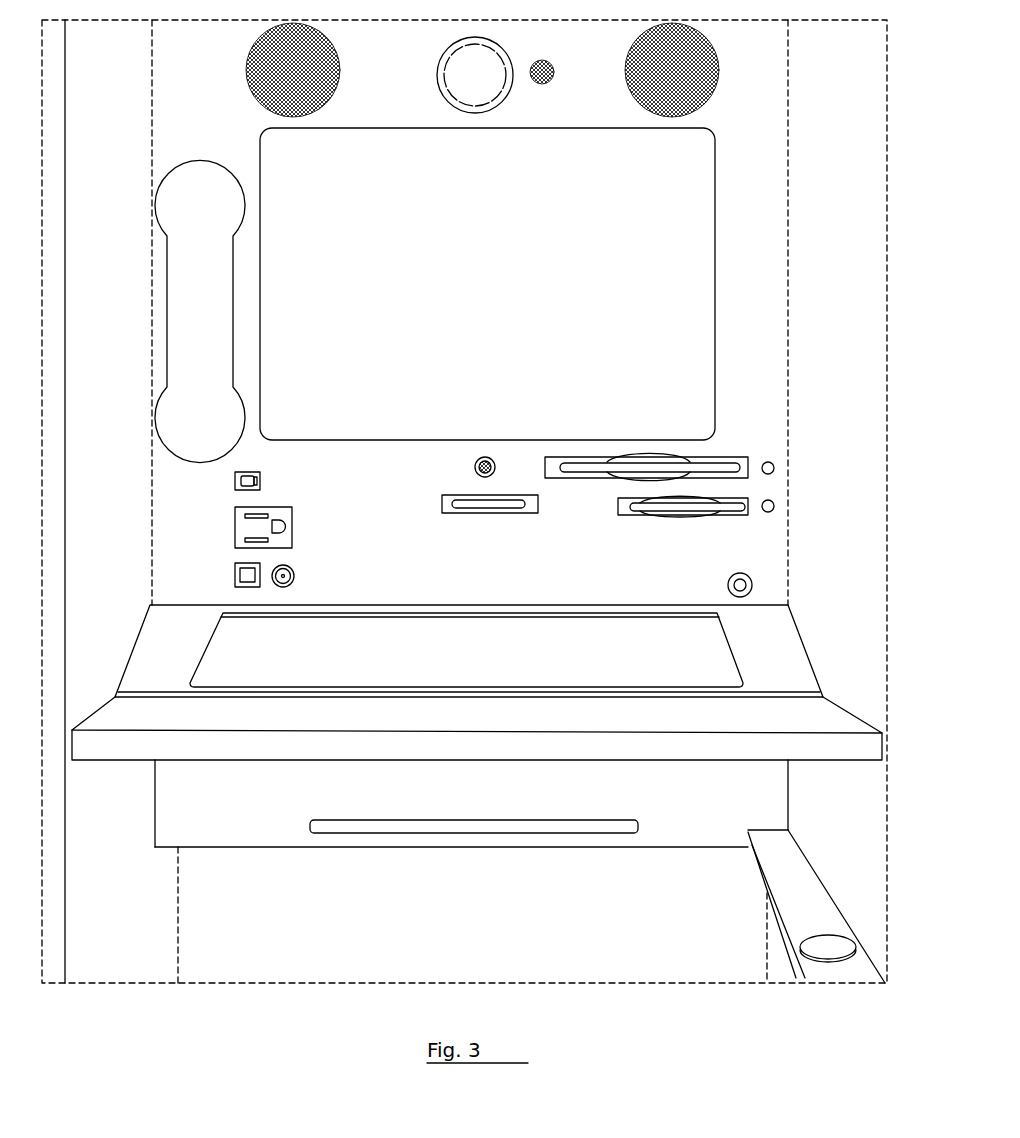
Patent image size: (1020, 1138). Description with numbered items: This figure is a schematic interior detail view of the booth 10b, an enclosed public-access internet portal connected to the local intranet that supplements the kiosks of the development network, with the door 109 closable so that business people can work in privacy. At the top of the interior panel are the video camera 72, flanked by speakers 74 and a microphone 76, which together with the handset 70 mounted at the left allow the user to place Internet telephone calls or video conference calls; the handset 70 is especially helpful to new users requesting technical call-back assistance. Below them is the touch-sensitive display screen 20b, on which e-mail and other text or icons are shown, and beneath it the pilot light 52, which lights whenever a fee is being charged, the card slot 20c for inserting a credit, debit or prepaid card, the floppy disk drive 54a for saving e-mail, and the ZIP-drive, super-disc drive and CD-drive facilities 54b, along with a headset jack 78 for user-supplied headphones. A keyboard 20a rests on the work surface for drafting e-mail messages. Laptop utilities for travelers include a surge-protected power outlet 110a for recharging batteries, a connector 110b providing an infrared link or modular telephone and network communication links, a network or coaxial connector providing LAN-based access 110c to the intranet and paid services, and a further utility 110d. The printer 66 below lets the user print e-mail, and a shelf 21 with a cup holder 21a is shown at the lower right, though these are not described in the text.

The booth 10b is at (124, 549).
The handset 70 is at (214, 428).
The video camera 72 is at (455, 72).
The speakers 74 is at (333, 82).
The microphone 76 is at (552, 82).
The laptop utility connector 110b is at (252, 478).
The display screen 20b is at (698, 432).
The drive facilities 54b is at (705, 467).
The pilot light 52 is at (474, 466).
The card slot 20c is at (500, 507).
The floppy disk drive 54a is at (660, 505).
The surge-protected power outlet 110a is at (253, 517).
The LAN-based access connector 110c is at (292, 572).
The headset jack 78 is at (730, 578).
The laptop utility 110d is at (483, 726).
The keyboard 20a is at (273, 676).
The door 109 is at (55, 874).
The printer 66 is at (557, 827).
The shelf 21 is at (816, 916).
The cup holder 21a is at (825, 950).